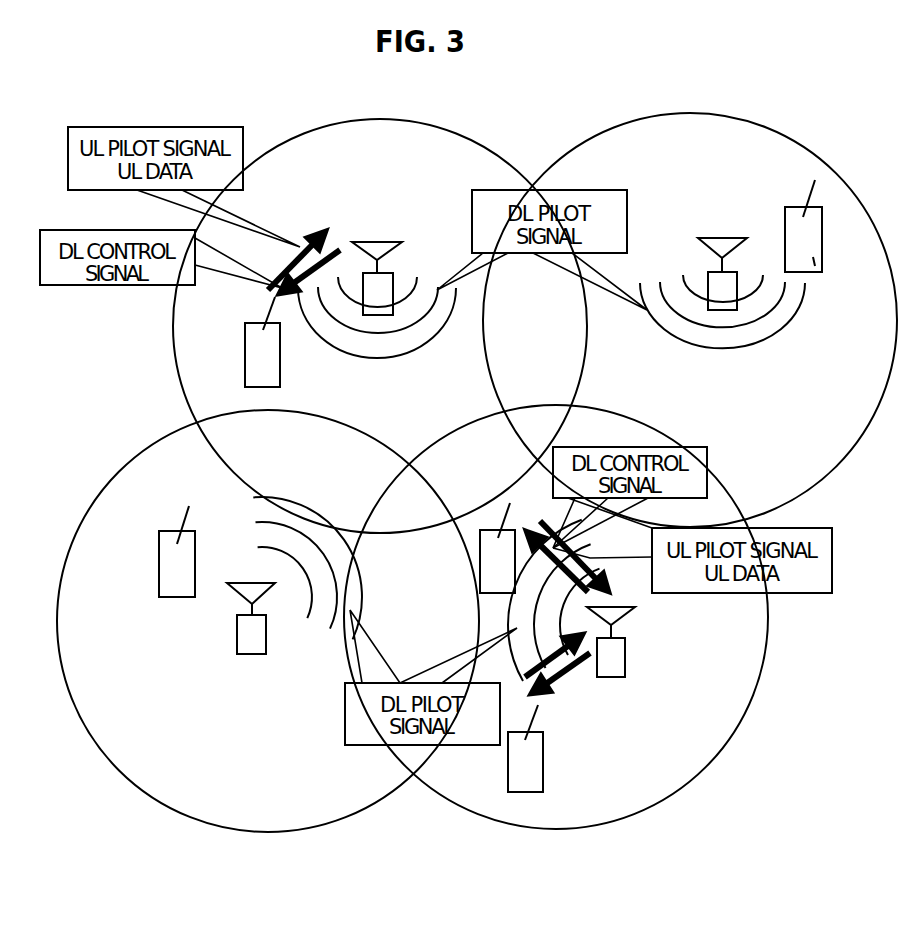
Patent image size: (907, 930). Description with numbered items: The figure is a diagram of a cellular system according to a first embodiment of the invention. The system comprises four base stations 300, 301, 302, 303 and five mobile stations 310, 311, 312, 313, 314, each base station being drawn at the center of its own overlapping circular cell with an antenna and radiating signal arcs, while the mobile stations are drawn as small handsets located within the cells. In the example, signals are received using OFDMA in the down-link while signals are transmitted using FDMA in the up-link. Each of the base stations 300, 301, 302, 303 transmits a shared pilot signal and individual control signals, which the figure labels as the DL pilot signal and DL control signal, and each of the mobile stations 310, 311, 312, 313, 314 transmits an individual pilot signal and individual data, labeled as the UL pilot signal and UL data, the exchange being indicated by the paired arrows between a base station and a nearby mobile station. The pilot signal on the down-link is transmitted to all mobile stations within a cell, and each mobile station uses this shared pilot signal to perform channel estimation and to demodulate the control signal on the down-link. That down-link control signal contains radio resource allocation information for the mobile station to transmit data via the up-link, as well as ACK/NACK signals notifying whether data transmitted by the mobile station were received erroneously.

The base station 300 is at (622, 616).
The base station 301 is at (722, 270).
The base station 302 is at (377, 275).
The base station 303 is at (286, 606).
The mobile station 310 is at (495, 530).
The mobile station 311 is at (527, 762).
The mobile station 312 is at (272, 345).
The mobile station 313 is at (176, 580).
The mobile station 314 is at (822, 269).